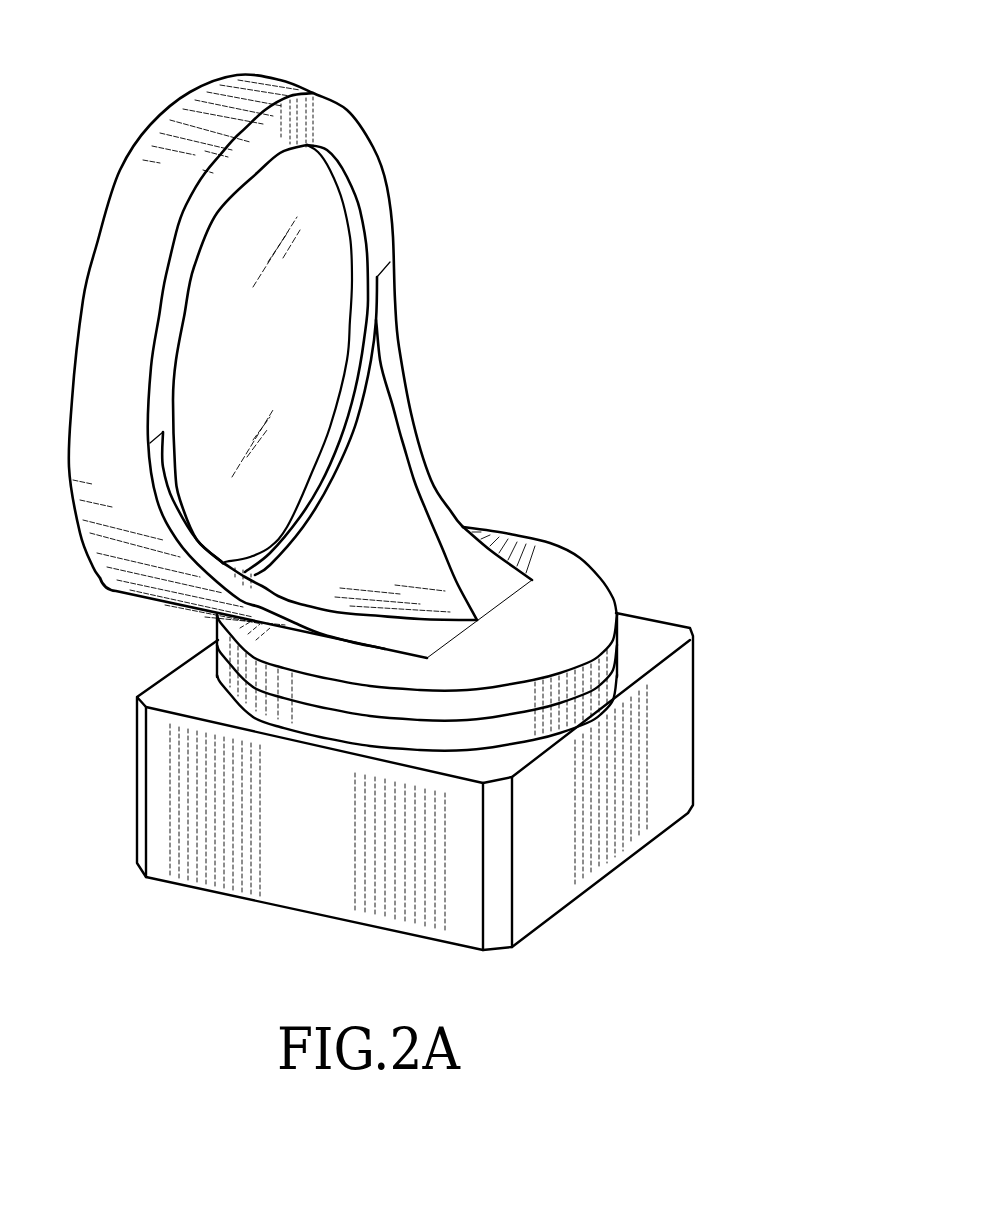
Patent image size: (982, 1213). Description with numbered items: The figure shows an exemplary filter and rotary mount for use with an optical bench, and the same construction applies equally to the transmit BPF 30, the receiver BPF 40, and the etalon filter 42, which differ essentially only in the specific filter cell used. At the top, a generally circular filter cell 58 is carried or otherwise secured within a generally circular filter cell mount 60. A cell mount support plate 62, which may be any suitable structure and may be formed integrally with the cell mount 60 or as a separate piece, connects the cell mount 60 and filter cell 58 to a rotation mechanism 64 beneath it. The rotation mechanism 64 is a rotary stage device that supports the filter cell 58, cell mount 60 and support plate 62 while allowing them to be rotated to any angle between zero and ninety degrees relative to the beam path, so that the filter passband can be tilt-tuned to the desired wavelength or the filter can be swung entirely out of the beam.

The transmit BPF 30 is at (436, 482).
The receiver BPF 40 is at (436, 482).
The etalon filter 42 is at (436, 482).
The filter cell 58 is at (281, 365).
The filter cell mount 60 is at (287, 80).
The cell mount support plate 62 is at (577, 576).
The rotation mechanism 64 is at (663, 624).